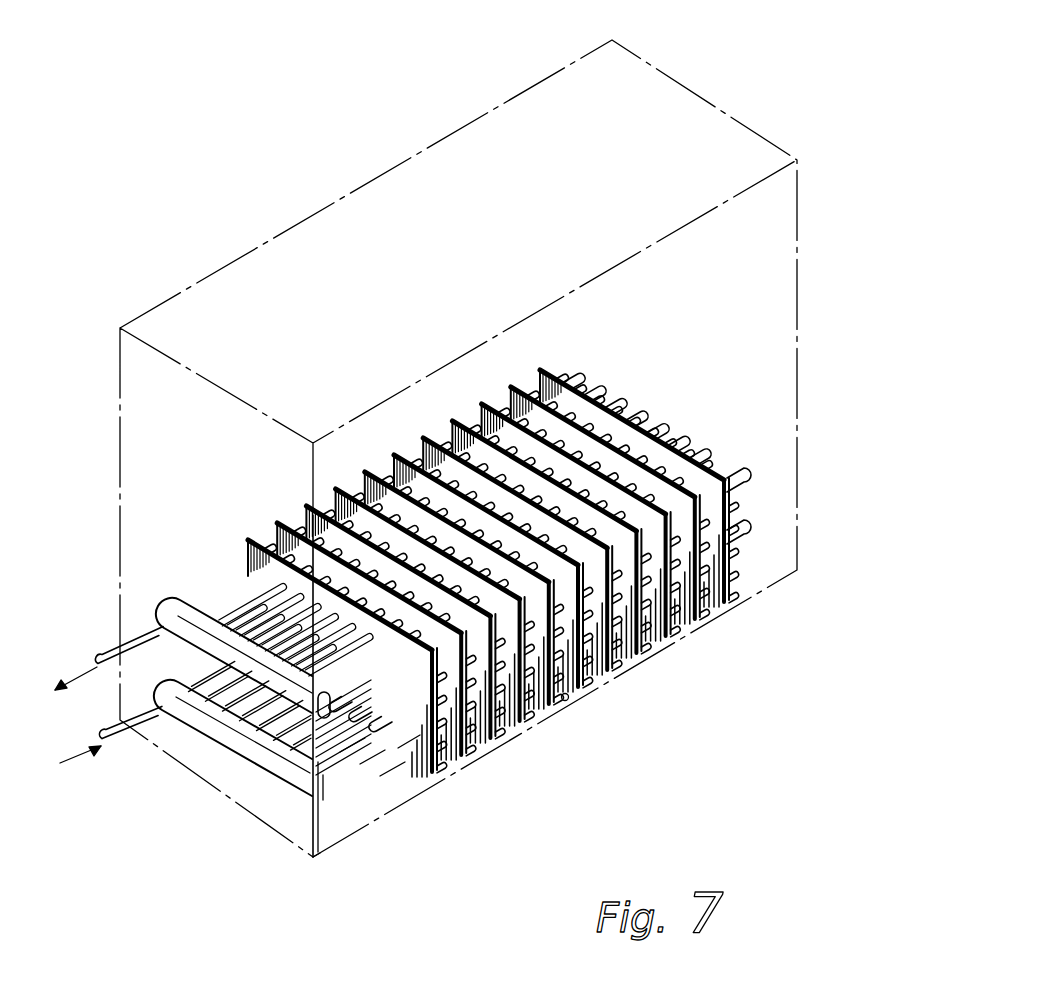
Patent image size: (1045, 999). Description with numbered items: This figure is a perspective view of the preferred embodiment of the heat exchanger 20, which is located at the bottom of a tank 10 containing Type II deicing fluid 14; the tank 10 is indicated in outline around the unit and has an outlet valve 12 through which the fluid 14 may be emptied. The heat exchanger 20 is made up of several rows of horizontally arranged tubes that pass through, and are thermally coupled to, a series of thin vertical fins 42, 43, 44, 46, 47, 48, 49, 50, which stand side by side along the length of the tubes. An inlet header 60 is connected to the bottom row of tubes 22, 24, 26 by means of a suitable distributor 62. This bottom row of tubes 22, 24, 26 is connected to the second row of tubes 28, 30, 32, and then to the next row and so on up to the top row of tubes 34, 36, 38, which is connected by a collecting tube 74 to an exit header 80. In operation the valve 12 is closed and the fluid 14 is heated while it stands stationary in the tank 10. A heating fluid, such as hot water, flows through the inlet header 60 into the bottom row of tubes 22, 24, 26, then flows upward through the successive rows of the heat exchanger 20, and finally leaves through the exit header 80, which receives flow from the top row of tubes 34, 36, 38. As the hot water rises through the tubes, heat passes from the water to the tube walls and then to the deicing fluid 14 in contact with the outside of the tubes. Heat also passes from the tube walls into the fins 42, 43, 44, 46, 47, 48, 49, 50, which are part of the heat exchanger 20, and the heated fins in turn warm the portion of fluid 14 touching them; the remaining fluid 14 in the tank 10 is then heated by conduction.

The tank 10 is at (704, 97).
The outlet valve 12 is at (615, 722).
The Type II deicing fluid 14 is at (140, 398).
The heat exchanger 20 is at (723, 464).
The tube 22 is at (360, 775).
The tube 24 is at (337, 770).
The tube 26 is at (322, 778).
The tube 28 is at (400, 755).
The tube 30 is at (400, 763).
The tube 32 is at (374, 767).
The tube 34 is at (254, 548).
The tube 36 is at (243, 593).
The tube 38 is at (230, 610).
The fin 42 is at (440, 756).
The fin 43 is at (482, 735).
The fin 44 is at (560, 722).
The fin 46 is at (598, 663).
The fin 47 is at (635, 652).
The fin 48 is at (660, 632).
The fin 49 is at (690, 614).
The fin 50 is at (733, 583).
The inlet header 60 is at (132, 734).
The distributor 62 is at (255, 748).
The collecting tube 74 is at (230, 658).
The exit header 80 is at (108, 656).